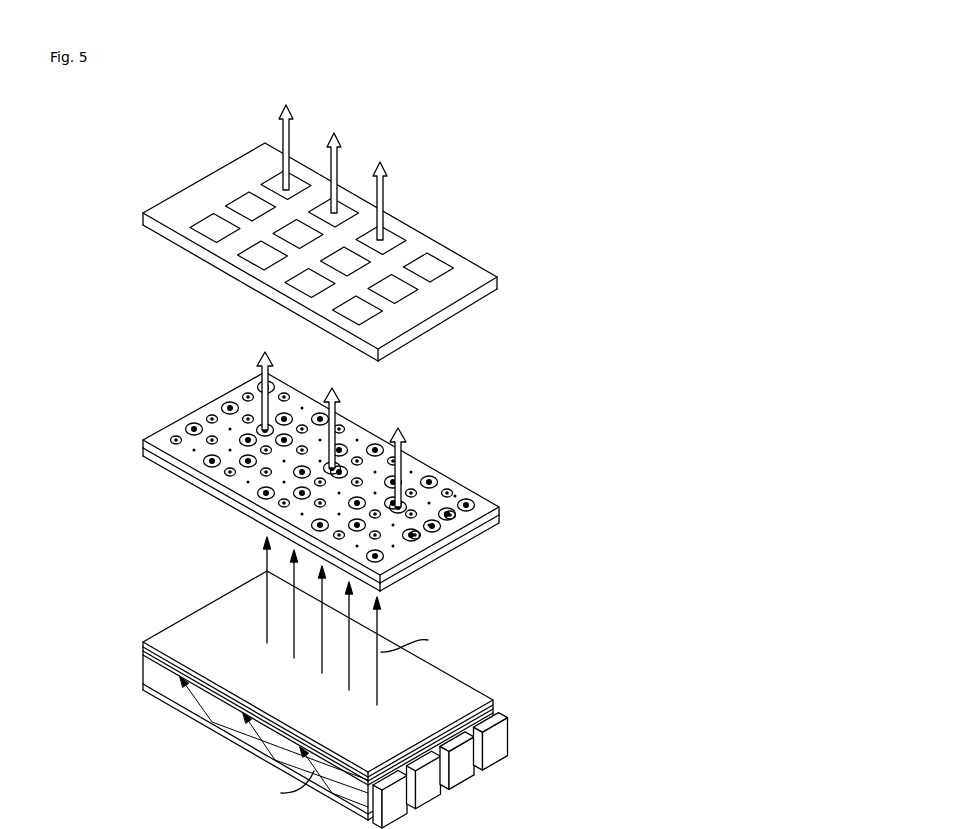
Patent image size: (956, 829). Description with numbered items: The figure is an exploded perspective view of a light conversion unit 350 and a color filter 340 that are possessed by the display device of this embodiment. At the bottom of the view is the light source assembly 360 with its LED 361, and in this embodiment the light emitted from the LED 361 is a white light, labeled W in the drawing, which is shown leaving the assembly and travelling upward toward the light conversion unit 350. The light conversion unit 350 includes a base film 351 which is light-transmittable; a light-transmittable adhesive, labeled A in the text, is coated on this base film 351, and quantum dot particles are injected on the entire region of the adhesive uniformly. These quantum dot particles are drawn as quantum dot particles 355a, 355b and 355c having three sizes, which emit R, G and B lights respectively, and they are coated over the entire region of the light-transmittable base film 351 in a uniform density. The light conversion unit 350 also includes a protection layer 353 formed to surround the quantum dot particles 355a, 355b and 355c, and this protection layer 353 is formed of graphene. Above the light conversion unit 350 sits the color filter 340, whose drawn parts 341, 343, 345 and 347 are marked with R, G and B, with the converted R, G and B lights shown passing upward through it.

The color filter 340 is at (351, 224).
The red color filter pattern 341 is at (195, 233).
The green color filter pattern 343 is at (252, 262).
The blue color filter pattern 345 is at (303, 287).
The color filter substrate 347 is at (455, 298).
The light conversion unit 350 is at (336, 471).
The base film 351 is at (494, 524).
The protection layer 353 is at (500, 507).
The quantum dot particle 355a is at (226, 402).
The quantum dot particle 355b is at (225, 475).
The quantum dot particle 355c is at (456, 494).
The light guide plate 360 is at (362, 682).
The LED 361 is at (464, 767).